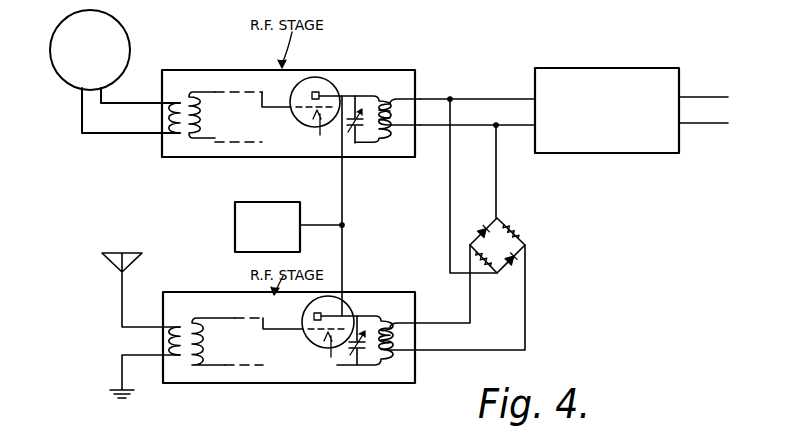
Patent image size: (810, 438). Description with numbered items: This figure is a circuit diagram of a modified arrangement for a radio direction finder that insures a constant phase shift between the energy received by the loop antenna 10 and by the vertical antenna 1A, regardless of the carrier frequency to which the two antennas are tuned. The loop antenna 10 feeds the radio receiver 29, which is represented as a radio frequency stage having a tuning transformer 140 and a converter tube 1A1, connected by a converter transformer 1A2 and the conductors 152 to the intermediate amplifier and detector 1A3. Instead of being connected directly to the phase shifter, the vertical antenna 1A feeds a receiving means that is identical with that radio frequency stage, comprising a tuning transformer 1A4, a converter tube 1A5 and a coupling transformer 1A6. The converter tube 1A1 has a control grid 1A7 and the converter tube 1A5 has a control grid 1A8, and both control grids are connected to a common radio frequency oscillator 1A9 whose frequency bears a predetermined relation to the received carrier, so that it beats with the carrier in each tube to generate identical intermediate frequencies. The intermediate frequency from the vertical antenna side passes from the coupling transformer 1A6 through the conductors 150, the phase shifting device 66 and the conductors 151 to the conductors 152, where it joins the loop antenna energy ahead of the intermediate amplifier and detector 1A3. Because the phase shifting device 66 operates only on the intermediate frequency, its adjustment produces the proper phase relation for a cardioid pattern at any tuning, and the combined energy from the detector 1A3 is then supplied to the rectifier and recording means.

The loop antenna 10 is at (58, 78).
The tuning transformer 140 is at (194, 90).
The radio receiver 29 is at (174, 159).
The converter tube 1A1 is at (337, 81).
The control grid 1A7 is at (315, 111).
The converter transformer 1A2 is at (389, 96).
The conductors 152 is at (429, 127).
The intermediate amplifier and detector 1A3 is at (583, 68).
The conductors 151 is at (497, 171).
The phase shifting device 66 is at (523, 236).
The conductors 150 is at (525, 302).
The radio frequency oscillator 1A9 is at (254, 207).
The vertical antenna 1A is at (120, 291).
The tuning transformer 1A4 is at (196, 318).
The converter tube 1A5 is at (344, 313).
The control grid 1A8 is at (322, 336).
The coupling transformer 1A6 is at (387, 362).